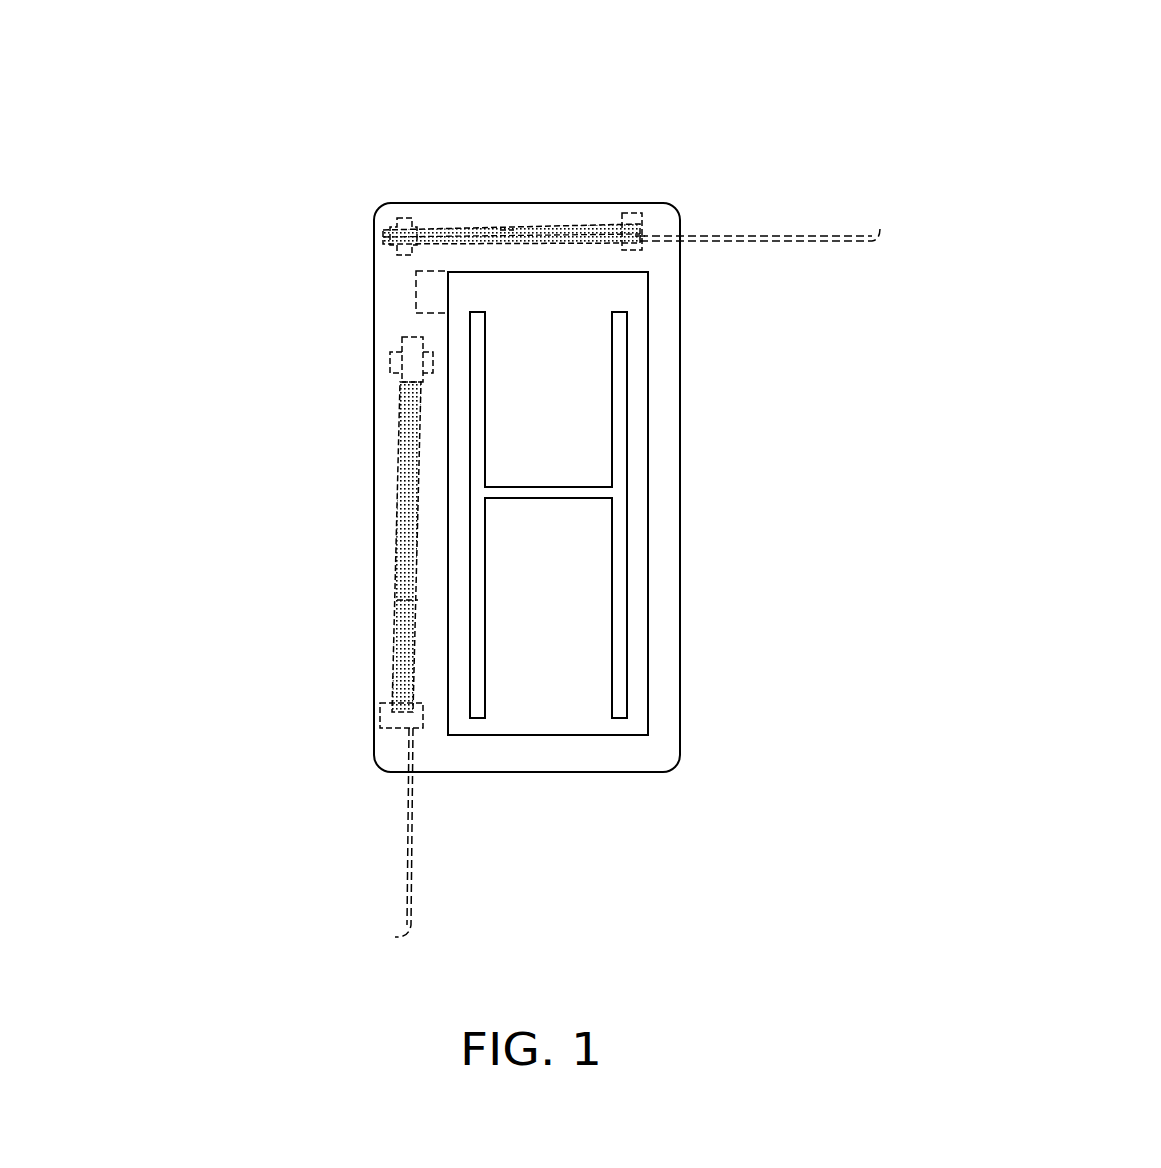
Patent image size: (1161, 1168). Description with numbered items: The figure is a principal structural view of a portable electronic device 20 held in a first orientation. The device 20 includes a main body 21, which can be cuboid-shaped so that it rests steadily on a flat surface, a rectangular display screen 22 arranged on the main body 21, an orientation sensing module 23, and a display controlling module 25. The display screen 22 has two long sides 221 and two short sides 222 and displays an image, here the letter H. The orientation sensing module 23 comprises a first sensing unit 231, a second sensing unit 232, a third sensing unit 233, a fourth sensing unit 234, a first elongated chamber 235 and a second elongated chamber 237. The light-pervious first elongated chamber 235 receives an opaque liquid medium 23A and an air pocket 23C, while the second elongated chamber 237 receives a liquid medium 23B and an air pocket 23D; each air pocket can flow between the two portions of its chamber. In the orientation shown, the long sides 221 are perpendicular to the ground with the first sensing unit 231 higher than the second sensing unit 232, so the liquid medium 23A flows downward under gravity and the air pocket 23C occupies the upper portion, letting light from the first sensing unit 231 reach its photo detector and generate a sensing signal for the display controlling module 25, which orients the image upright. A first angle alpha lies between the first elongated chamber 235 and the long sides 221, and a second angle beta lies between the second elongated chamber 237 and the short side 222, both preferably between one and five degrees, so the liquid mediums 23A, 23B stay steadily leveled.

The portable electronic device 20 is at (724, 62).
The main body 21 is at (680, 577).
The long sides 221 is at (649, 632).
The short sides 222 is at (525, 735).
The display screen 22 is at (558, 707).
The display controlling module 25 is at (437, 290).
The orientation sensing module 23 is at (735, 103).
The first sensing unit 231 is at (390, 360).
The second sensing unit 232 is at (385, 717).
The third sensing unit 233 is at (403, 218).
The fourth sensing unit 234 is at (632, 213).
The first elongated chamber 235 is at (398, 468).
The second elongated chamber 237 is at (580, 224).
The liquid medium 23A is at (398, 607).
The liquid medium 23B is at (507, 233).
The air pocket 23C is at (412, 347).
The air pocket 23D is at (638, 224).